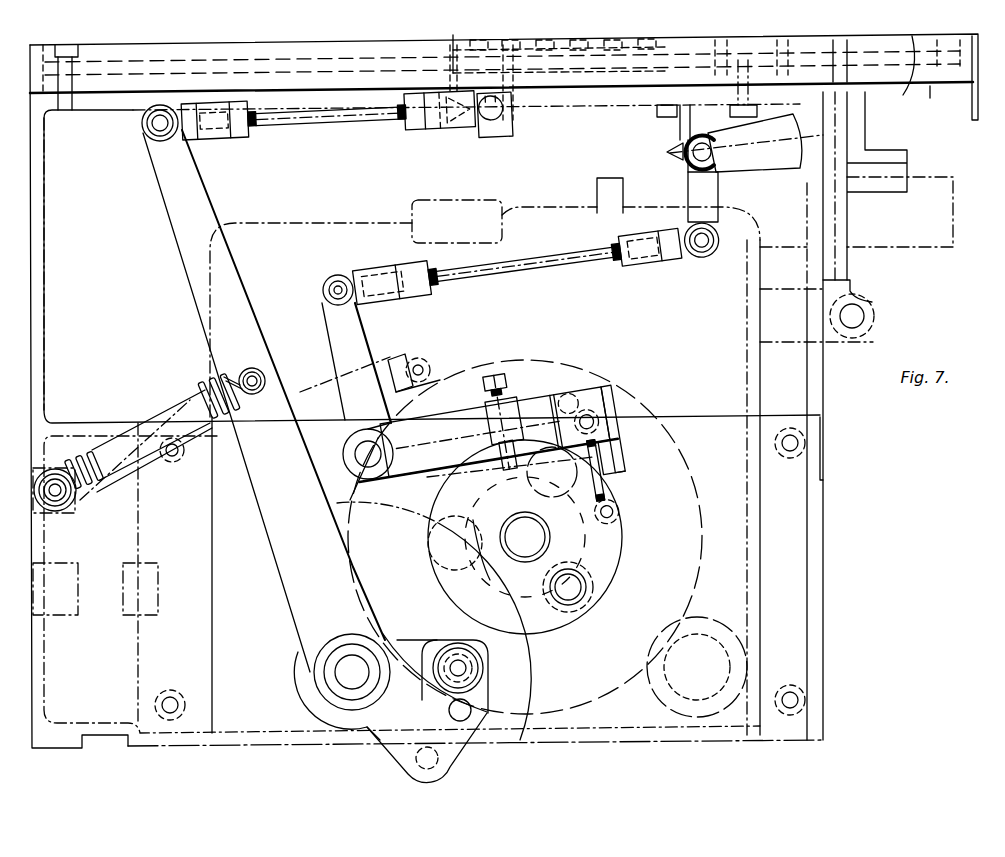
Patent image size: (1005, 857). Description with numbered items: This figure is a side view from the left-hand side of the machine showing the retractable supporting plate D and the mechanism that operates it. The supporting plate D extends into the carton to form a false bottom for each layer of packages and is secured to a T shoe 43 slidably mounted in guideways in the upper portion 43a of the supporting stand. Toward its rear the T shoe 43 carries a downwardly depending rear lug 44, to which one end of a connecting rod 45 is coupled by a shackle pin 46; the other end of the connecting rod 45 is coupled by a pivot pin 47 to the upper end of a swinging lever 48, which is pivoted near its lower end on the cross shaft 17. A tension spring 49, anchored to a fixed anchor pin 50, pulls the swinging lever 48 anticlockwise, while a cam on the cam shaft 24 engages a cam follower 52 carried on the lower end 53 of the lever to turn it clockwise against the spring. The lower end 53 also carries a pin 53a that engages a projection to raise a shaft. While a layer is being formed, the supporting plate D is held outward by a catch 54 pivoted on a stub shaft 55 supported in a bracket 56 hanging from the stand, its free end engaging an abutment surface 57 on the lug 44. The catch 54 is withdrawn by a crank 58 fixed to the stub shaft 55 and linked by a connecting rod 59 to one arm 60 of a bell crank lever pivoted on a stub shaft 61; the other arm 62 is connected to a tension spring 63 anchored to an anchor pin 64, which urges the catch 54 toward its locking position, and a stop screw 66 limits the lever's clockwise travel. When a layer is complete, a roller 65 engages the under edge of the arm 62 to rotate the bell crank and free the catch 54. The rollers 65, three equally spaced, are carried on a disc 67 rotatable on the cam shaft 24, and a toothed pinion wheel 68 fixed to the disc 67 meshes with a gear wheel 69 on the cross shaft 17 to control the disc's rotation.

The cross shaft 17 is at (352, 672).
The cam shaft 24 is at (551, 539).
The T shoe 43 is at (604, 64).
The upper portion of the supporting stand 43a is at (930, 88).
The supporting plate D is at (907, 74).
The rear lug 44 is at (495, 132).
The connecting rod 45 is at (318, 118).
The shackle pin 46 is at (512, 112).
The pivot pin 47 is at (143, 126).
The swinging lever 48 is at (175, 185).
The tension spring 49 is at (203, 395).
The anchor pin 50 is at (62, 503).
The cam follower 52 is at (440, 757).
The lower end of the swinging lever 53 is at (455, 770).
The pin 53a is at (420, 762).
The catch 54 is at (774, 172).
The stub shaft 55 is at (712, 153).
The bracket 56 is at (678, 129).
The abutment surface 57 is at (478, 128).
The crank 58 is at (690, 189).
The connecting rod 59 is at (520, 272).
The arm of the bell crank lever 60 is at (360, 328).
The stub shaft 61 is at (343, 467).
The arm of the bell crank lever 62 is at (532, 410).
The tension spring 63 is at (612, 452).
The anchor pin 64 is at (612, 508).
The roller 65 is at (523, 485).
The stop screw 66 is at (510, 378).
The disc 67 is at (614, 556).
The toothed pinion wheel 68 is at (488, 577).
The gear wheel 69 is at (528, 670).